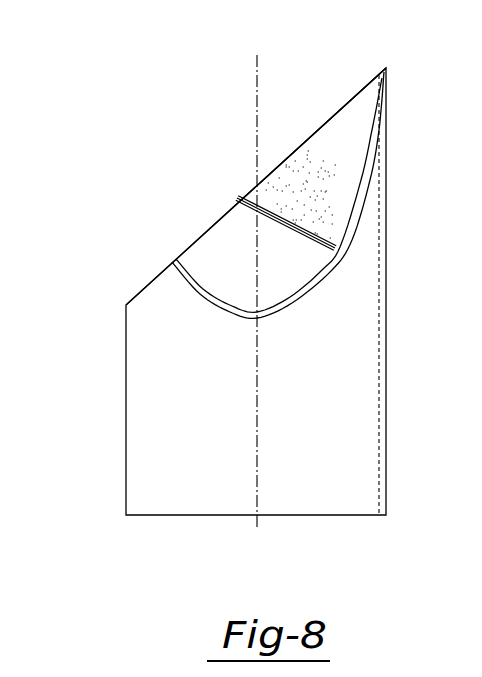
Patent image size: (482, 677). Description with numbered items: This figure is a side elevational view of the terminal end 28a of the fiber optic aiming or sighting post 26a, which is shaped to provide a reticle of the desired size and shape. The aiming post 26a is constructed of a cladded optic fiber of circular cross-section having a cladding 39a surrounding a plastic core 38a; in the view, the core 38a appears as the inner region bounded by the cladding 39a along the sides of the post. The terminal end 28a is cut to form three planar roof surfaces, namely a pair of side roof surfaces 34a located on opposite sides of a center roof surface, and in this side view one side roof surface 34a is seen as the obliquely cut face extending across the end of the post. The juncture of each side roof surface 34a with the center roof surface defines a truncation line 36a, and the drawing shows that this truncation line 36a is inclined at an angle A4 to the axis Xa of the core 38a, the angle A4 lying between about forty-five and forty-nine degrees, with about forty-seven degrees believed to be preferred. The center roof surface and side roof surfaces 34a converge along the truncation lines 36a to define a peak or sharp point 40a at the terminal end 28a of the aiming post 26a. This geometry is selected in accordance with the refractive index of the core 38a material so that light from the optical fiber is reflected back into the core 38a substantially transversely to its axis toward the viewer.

The aiming post 26a is at (108, 432).
The terminal end 28a is at (238, 160).
The side roof surfaces 34a is at (332, 179).
The truncation line 36a is at (328, 119).
The core 38a is at (177, 485).
The cladding 39a is at (374, 116).
The peak or sharp point 40a is at (386, 68).
The angle A4 is at (248, 352).
The axis Xa is at (258, 388).